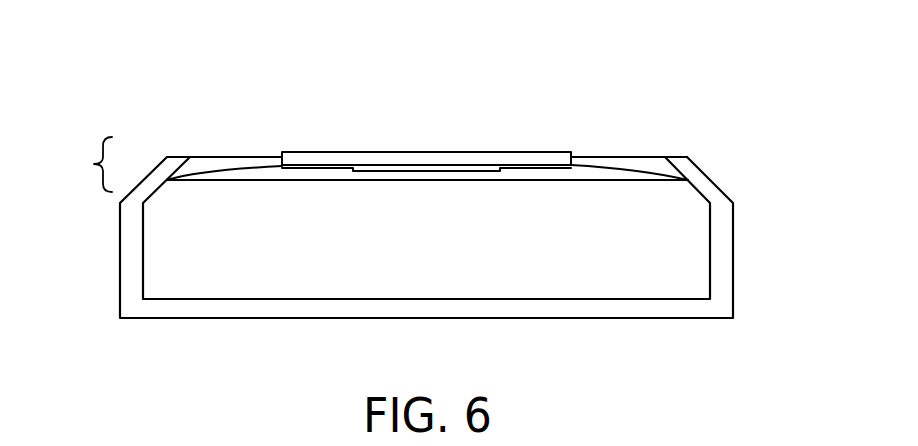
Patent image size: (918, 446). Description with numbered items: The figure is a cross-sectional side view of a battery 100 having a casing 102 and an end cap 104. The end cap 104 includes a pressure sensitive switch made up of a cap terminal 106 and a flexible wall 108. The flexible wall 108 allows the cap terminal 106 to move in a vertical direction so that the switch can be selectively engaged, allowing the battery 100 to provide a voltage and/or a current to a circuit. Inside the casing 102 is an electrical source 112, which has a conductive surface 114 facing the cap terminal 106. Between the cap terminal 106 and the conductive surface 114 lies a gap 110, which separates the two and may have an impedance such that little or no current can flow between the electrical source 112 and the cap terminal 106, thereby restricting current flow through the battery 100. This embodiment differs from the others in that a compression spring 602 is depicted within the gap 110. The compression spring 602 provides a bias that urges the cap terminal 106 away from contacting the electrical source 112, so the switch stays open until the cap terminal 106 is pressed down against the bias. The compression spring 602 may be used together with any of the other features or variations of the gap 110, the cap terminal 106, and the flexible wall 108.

The battery 100 is at (151, 46).
The casing 102 is at (725, 250).
The end cap 104 is at (83, 164).
The cap terminal 106 is at (492, 158).
The flexible wall 108 is at (632, 155).
The gap 110 is at (678, 168).
The electrical source 112 is at (153, 263).
The conductive surface 114 is at (268, 182).
The compression spring 602 is at (208, 172).